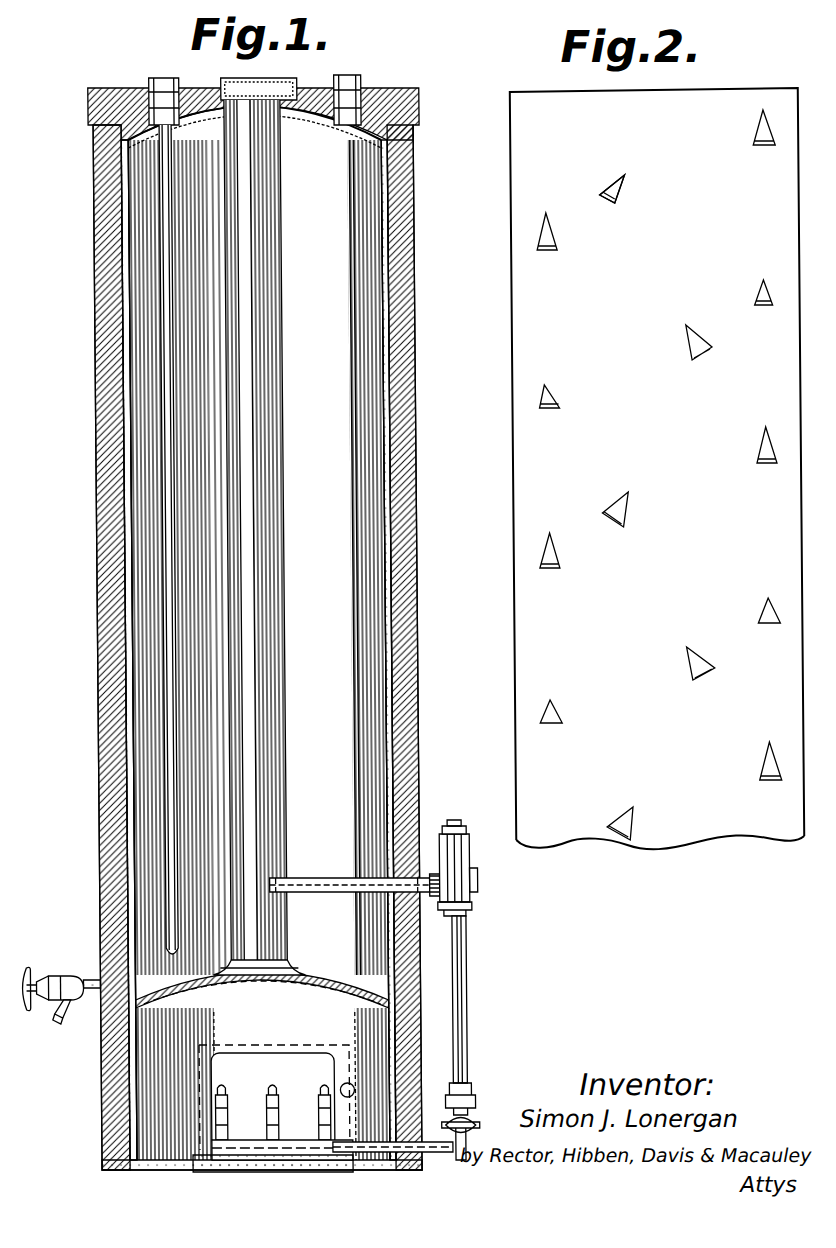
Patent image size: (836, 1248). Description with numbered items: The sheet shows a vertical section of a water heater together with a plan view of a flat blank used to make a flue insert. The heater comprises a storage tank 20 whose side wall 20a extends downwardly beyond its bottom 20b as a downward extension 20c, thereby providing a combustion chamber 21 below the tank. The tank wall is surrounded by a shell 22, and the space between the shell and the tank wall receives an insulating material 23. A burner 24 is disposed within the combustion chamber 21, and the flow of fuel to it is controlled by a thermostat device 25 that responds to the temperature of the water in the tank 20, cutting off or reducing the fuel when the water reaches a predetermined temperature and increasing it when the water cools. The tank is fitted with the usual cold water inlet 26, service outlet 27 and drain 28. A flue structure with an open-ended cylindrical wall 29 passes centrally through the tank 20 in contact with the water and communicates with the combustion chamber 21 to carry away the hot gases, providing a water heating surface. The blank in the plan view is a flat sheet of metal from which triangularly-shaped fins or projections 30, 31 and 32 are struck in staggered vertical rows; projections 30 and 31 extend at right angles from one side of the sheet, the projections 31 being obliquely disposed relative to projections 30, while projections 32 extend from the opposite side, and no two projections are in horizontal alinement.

In FIG. 1, the storage tank 20 is at (365, 178).
In FIG. 1, the side wall 20a is at (378, 461).
In FIG. 1, the bottom 20b is at (300, 982).
In FIG. 1, the downward extension of side wall 20c is at (390, 1040).
In FIG. 1, the combustion chamber 21 is at (142, 1056).
In FIG. 1, the shell 22 is at (398, 284).
In FIG. 1, the insulating material 23 is at (403, 348).
In FIG. 1, the burner 24 is at (250, 1150).
In FIG. 1, the thermostat device 25 is at (460, 872).
In FIG. 1, the cold water inlet 26 is at (148, 262).
In FIG. 1, the service outlet 27 is at (347, 80).
In FIG. 1, the drain 28 is at (60, 976).
In FIG. 1, the cylindrical wall 29 is at (254, 425).
In FIG. 2, the triangularly-shaped projection 30 is at (548, 251).
In FIG. 2, the triangularly-shaped projection 31 is at (612, 205).
In FIG. 2, the triangularly-shaped projection 32 is at (556, 395).